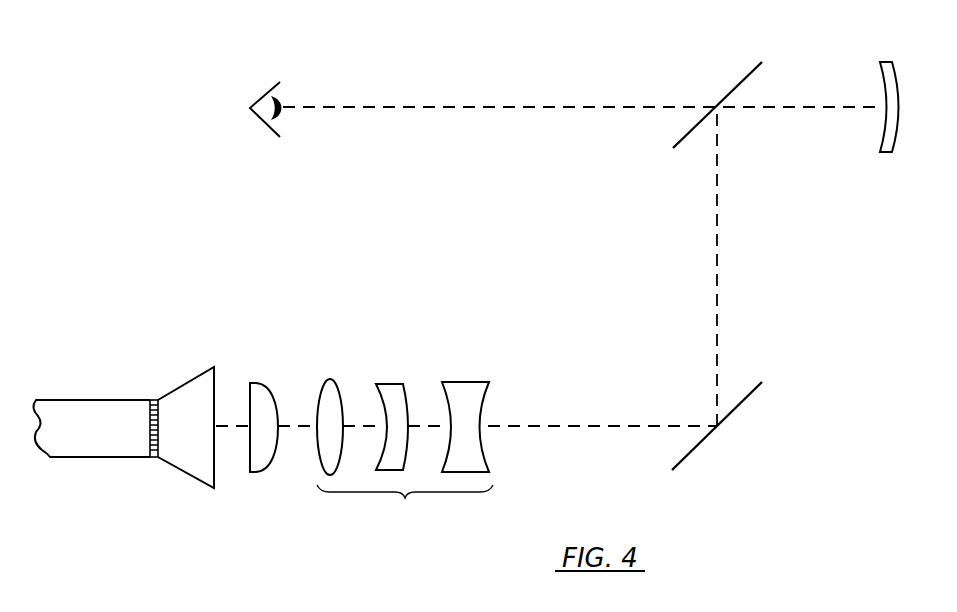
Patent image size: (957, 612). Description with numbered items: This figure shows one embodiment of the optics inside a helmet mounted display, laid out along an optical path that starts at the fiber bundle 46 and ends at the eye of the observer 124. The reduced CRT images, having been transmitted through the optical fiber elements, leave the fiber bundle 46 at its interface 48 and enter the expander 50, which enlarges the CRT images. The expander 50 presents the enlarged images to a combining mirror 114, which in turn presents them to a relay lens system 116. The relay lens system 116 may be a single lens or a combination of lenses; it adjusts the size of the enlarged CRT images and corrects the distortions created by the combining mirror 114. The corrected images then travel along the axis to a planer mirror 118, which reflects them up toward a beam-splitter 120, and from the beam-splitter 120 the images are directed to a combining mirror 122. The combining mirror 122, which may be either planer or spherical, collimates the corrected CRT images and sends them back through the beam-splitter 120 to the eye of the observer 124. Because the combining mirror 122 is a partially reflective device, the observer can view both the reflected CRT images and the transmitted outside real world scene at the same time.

The fiber bundle 46 is at (108, 458).
The interface 48 is at (153, 398).
The expander 50 is at (189, 472).
The combining mirror 114 is at (263, 382).
The relay lens system 116 is at (405, 454).
The planer mirror 118 is at (702, 443).
The beam-splitter 120 is at (737, 85).
The combining mirror 122 is at (902, 92).
The eye of the observer 124 is at (262, 97).